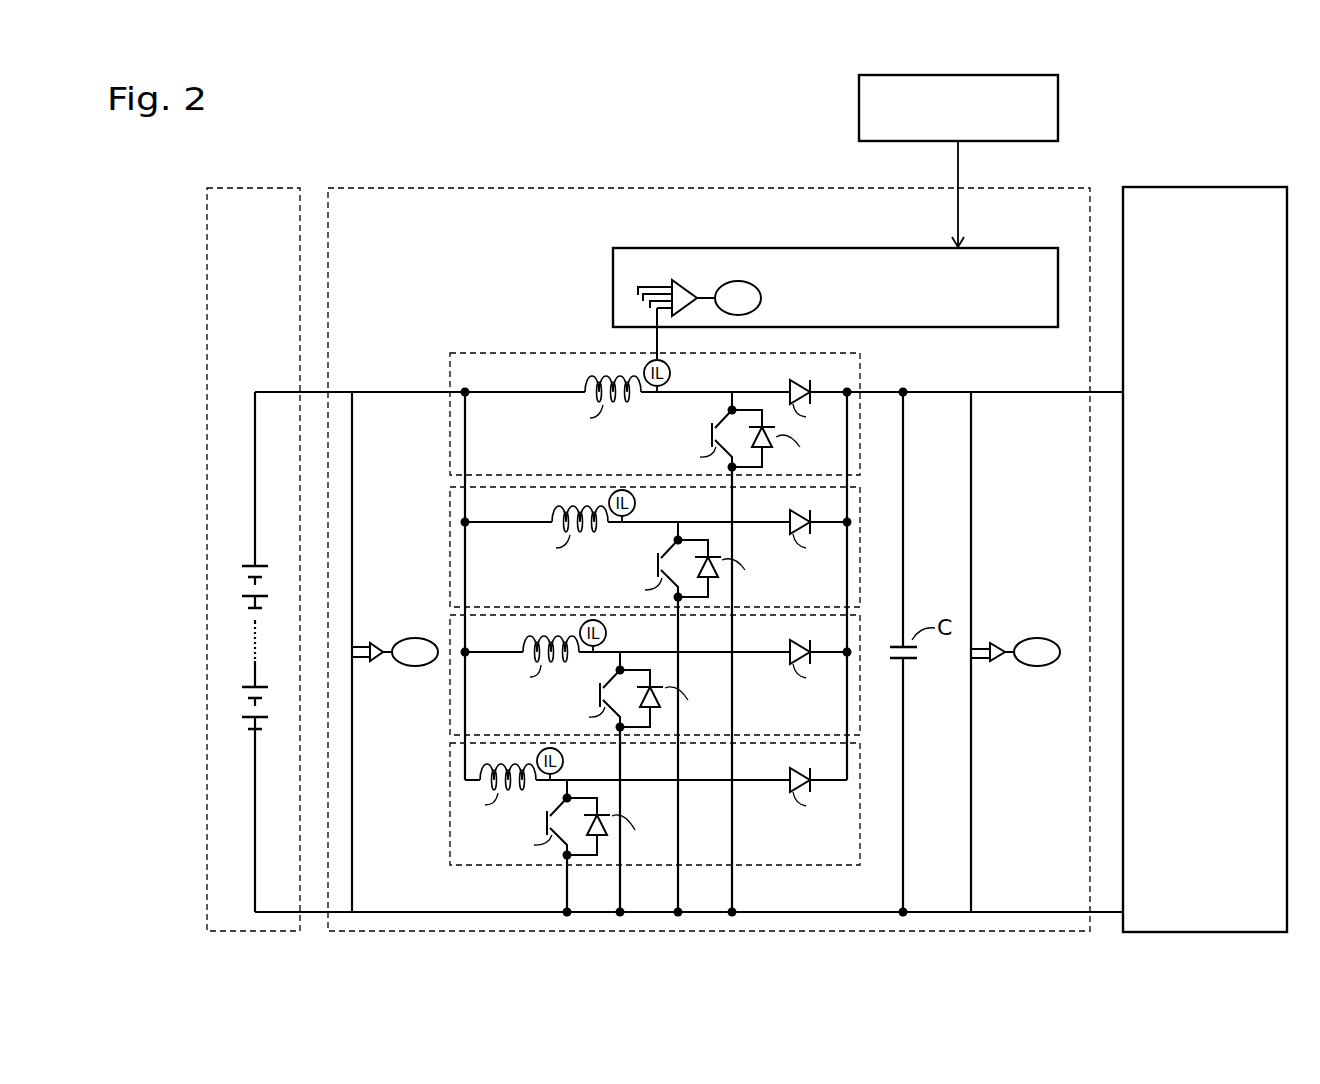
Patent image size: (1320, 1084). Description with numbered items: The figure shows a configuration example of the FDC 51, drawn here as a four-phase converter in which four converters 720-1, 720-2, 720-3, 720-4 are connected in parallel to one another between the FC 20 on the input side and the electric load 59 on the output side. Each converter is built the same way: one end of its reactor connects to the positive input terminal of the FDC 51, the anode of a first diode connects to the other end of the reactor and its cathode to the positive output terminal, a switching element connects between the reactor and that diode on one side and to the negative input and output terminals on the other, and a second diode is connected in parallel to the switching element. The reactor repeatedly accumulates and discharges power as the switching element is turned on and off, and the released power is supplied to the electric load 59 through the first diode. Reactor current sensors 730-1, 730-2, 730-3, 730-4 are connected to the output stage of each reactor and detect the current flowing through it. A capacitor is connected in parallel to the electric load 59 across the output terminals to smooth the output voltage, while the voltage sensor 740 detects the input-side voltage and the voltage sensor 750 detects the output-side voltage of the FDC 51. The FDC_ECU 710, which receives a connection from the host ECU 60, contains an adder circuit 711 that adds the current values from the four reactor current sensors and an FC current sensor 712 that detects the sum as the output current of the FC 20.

The FC 20 is at (262, 187).
The FDC 51 is at (1050, 187).
The electric load 59 is at (1246, 187).
The host ECU 60 is at (1020, 75).
The FDC_ECU 710 is at (846, 288).
The adder circuit 711 is at (683, 283).
The FC current sensor 712 is at (762, 298).
The converter 720-1 is at (613, 414).
The converter 720-2 is at (613, 547).
The converter 720-3 is at (613, 655).
The converter 720-4 is at (613, 781).
The reactor current sensor 730-1 is at (671, 370).
The reactor current sensor 730-2 is at (636, 500).
The reactor current sensor 730-3 is at (580, 626).
The reactor current sensor 730-4 is at (538, 752).
The voltage sensor 740 is at (417, 637).
The voltage sensor 750 is at (1037, 638).